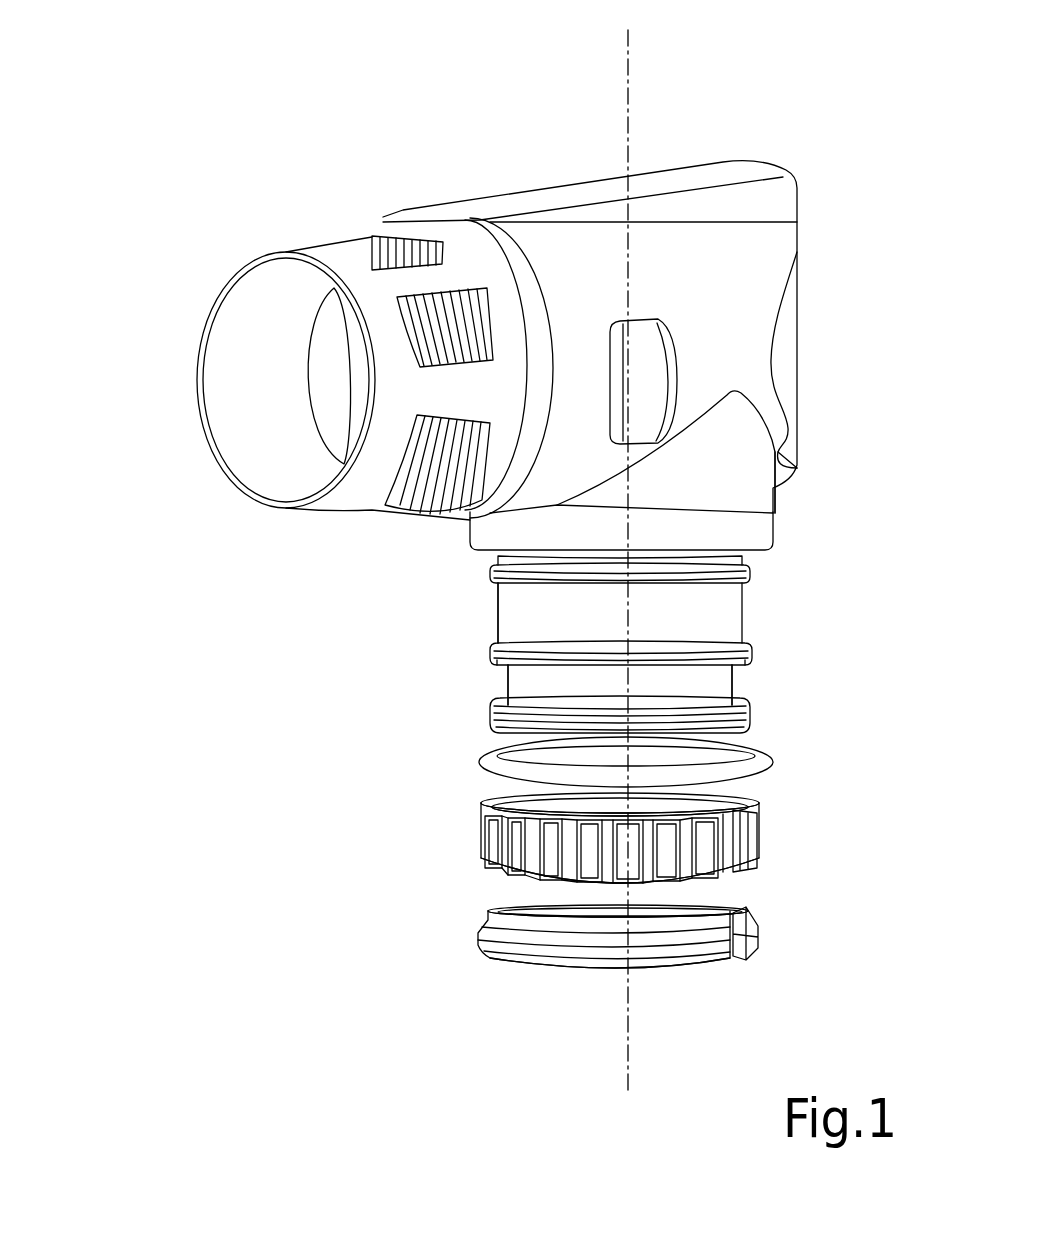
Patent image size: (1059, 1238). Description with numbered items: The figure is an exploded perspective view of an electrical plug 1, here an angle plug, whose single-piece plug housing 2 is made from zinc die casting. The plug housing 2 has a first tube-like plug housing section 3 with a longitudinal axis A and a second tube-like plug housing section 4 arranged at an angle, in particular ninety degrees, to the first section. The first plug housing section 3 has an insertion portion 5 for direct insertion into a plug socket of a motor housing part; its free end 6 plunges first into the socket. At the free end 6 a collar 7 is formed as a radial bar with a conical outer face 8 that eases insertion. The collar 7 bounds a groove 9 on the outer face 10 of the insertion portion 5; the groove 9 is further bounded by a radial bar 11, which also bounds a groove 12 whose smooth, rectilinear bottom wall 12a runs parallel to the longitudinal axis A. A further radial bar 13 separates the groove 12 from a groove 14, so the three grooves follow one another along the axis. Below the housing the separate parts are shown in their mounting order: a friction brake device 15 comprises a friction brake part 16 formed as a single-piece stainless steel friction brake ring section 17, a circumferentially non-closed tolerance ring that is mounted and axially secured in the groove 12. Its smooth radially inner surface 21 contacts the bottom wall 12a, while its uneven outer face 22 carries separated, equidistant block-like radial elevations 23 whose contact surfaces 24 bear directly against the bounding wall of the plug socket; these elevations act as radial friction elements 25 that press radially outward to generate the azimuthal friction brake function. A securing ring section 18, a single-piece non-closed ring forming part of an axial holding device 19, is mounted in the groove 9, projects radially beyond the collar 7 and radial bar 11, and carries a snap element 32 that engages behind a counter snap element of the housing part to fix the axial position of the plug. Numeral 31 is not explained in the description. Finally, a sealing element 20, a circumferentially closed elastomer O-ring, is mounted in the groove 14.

The electrical plug 1 is at (553, 270).
The plug housing 2 is at (800, 250).
The first tube-like plug housing section 3 is at (800, 458).
The second tube-like plug housing section 4 is at (423, 200).
The insertion portion 5 is at (648, 637).
The free end 6 is at (755, 700).
The collar 7 is at (495, 688).
The conical outer face 8 is at (510, 724).
The groove 9 is at (740, 675).
The outer face 10 is at (497, 628).
The radial bar 11 is at (497, 655).
The groove 12 is at (745, 590).
The bottom wall 12a is at (512, 606).
The radial bar 13 is at (748, 572).
The groove 14 is at (487, 562).
The friction brake device 15 is at (757, 840).
The friction brake part 16 is at (614, 906).
The friction brake ring section 17 is at (478, 872).
The securing ring section 18 is at (622, 951).
The axial holding device 19 is at (770, 955).
The sealing element 20 is at (768, 747).
The radially inner surface 21 is at (715, 800).
The outer face 22 is at (478, 827).
The radial elevations 23 is at (512, 872).
The contact surfaces 24 is at (548, 872).
The radial friction elements 25 is at (597, 875).
The lower edge of retaining ring 31 is at (500, 950).
The snap element 32 is at (490, 925).
The longitudinal axis A is at (626, 83).